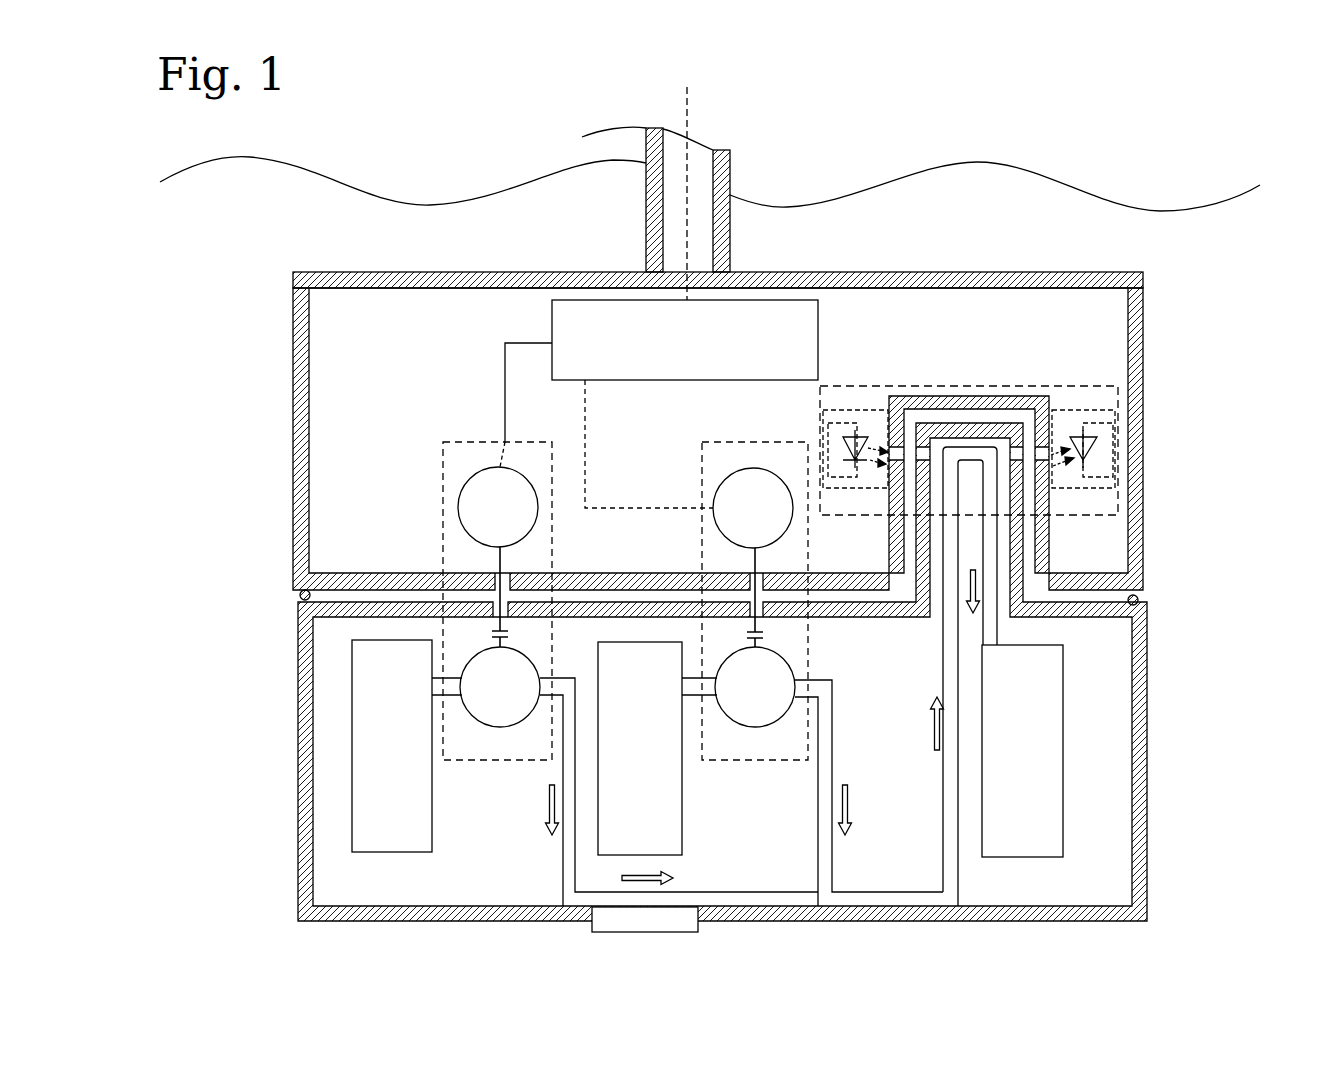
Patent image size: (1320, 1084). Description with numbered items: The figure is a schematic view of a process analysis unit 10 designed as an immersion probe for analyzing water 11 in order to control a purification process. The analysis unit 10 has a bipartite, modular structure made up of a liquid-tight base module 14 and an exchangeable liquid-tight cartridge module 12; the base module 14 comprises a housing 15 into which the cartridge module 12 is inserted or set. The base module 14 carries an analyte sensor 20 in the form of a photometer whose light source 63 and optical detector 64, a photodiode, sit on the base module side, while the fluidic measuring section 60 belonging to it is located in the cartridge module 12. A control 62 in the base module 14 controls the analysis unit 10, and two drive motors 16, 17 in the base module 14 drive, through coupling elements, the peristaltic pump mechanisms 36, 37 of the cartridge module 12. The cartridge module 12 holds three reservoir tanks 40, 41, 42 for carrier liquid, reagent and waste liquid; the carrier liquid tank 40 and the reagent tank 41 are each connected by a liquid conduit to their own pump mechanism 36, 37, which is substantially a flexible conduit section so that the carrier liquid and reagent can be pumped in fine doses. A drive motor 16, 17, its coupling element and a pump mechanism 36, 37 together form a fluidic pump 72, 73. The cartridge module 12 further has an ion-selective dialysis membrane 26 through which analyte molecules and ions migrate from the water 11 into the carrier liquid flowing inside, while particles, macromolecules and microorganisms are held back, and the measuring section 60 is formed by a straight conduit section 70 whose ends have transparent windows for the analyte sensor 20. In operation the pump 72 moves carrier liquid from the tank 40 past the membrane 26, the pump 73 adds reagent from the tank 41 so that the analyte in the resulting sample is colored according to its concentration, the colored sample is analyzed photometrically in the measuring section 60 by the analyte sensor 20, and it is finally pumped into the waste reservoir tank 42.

The process analysis unit 10 is at (398, 262).
The water 11 is at (1223, 271).
The cartridge module 12 is at (290, 649).
The base module 14 is at (287, 364).
The housing 15 is at (512, 276).
The drive motor 16 is at (455, 503).
The drive motor 17 is at (703, 490).
The analyte sensor 20 is at (888, 396).
The ion-selective dialysis membrane 26 is at (698, 924).
The peristaltic pump mechanism 36 is at (487, 708).
The peristaltic pump mechanism 37 is at (778, 705).
The carrier liquid reservoir tank 40 is at (368, 833).
The reagent reservoir tank 41 is at (660, 773).
The waste reservoir tank 42 is at (1037, 678).
The fluidic measuring section 60 is at (982, 438).
The control 62 is at (745, 335).
The light source 63 is at (843, 408).
The optical detector 64 is at (1065, 410).
The straight conduit section 70 is at (955, 462).
The fluidic pump 72 is at (441, 545).
The fluidic pump 73 is at (743, 473).